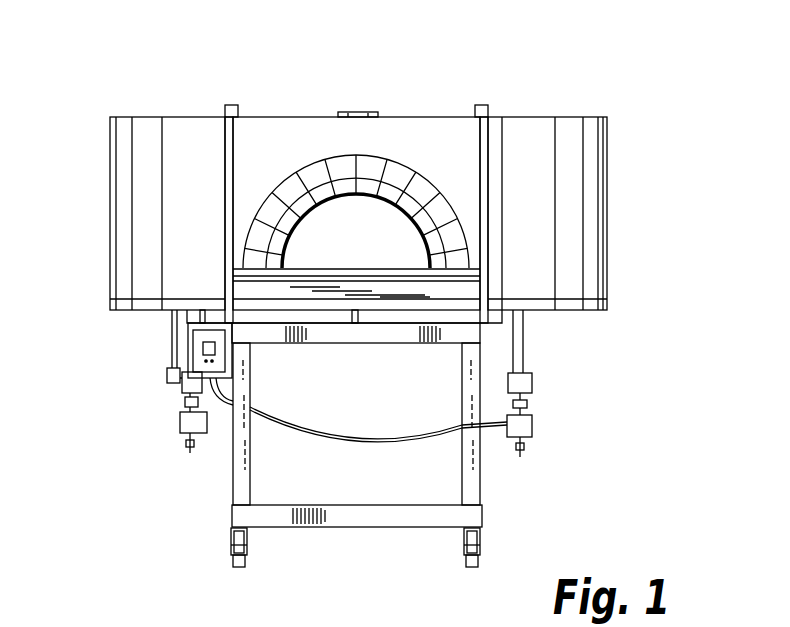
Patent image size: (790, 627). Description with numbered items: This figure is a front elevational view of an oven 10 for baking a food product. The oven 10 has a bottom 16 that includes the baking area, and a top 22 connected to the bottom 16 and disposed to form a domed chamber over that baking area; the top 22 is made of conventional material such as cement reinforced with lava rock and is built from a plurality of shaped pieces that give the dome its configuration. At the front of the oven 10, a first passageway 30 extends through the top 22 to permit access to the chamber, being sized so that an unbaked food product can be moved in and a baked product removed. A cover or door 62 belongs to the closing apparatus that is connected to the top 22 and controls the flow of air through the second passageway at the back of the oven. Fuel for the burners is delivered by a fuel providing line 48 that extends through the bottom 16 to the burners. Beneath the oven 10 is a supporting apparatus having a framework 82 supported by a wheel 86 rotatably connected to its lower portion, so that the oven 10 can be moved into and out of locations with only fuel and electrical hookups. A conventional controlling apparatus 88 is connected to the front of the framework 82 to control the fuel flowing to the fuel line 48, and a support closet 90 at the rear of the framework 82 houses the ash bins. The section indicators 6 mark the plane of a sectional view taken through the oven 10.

The oven 10 is at (600, 110).
The top 22 is at (143, 116).
The bottom 16 is at (603, 306).
The first passageway 30 is at (402, 162).
The cover or door 62 is at (356, 231).
The section line 6- 6 is at (130, 250).
The fuel providing line 48 is at (173, 315).
The controlling apparatus 88 is at (187, 347).
The support closet 90 is at (386, 397).
The framework 82 is at (235, 473).
The wheel 86 is at (232, 557).